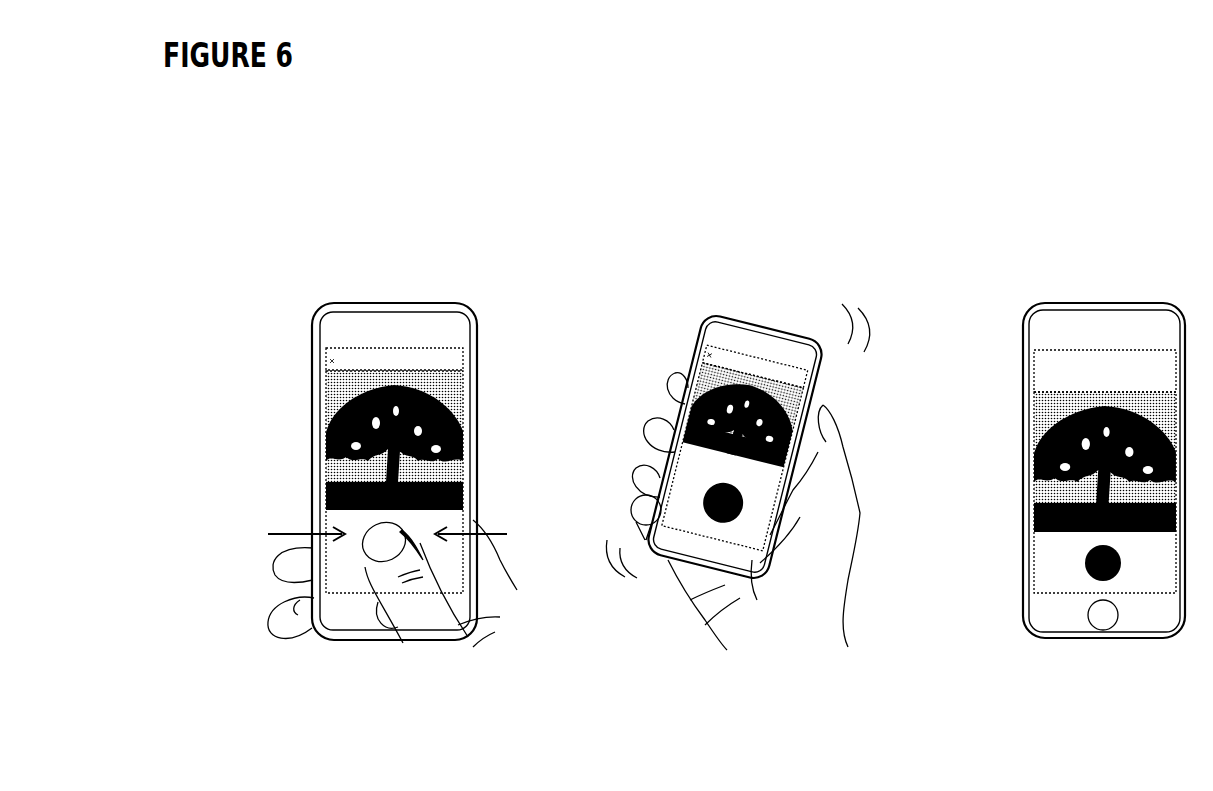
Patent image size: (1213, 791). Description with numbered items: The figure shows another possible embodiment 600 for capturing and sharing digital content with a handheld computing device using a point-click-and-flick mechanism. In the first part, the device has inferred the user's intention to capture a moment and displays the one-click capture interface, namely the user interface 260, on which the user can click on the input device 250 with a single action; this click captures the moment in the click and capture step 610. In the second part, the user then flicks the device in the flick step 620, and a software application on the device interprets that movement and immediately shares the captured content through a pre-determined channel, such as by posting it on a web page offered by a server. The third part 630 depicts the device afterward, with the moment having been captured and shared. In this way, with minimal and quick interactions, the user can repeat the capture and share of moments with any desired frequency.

The embodiment for capture and share 600 is at (698, 112).
The click and capture step 610 is at (409, 276).
The flick step 620 is at (746, 272).
The third view of device showing live photos 630 is at (1114, 271).
The input device 250 is at (259, 537).
The user interface 260 is at (560, 548).